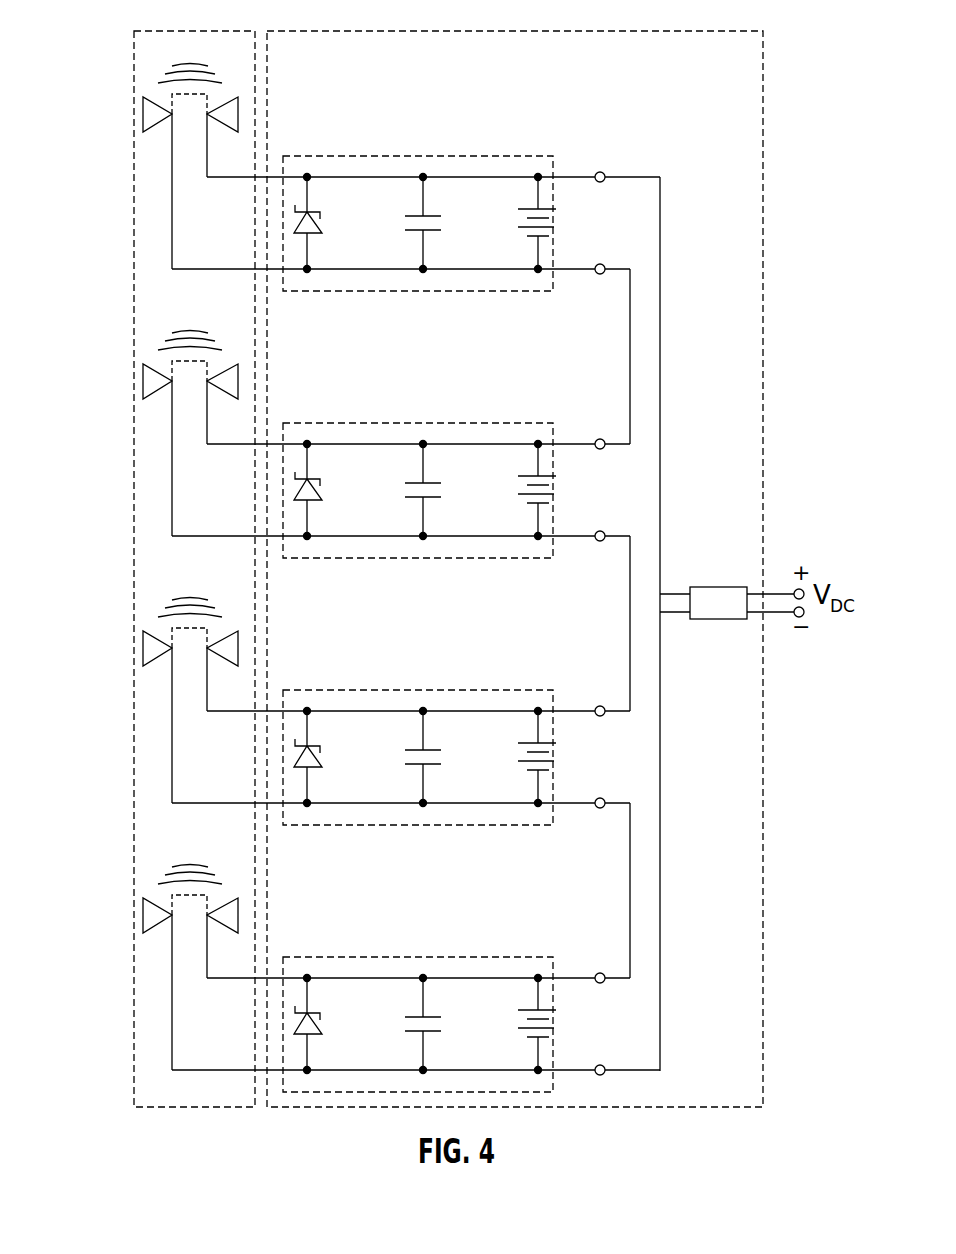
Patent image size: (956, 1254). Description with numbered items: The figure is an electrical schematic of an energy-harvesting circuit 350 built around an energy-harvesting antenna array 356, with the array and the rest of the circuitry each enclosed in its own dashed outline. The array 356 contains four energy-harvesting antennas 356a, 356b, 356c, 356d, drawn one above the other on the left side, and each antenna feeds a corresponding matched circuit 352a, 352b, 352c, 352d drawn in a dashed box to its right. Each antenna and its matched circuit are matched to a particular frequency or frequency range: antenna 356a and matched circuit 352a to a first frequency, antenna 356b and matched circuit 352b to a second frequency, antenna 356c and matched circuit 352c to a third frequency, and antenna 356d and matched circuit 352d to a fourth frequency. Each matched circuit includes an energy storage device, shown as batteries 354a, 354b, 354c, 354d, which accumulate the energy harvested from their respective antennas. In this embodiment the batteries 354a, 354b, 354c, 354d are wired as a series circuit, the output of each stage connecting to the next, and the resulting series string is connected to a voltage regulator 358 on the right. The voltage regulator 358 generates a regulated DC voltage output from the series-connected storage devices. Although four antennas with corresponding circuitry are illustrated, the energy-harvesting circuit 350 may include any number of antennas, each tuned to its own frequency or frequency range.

The energy-harvesting circuit 350 is at (716, 134).
The matched circuit 352a is at (401, 194).
The matched circuit 352b is at (401, 461).
The matched circuit 352c is at (401, 728).
The matched circuit 352d is at (401, 995).
The battery 354a is at (556, 223).
The battery 354b is at (556, 490).
The battery 354c is at (556, 757).
The battery 354d is at (556, 1024).
The energy-harvesting antenna array 356 is at (133, 548).
The energy-harvesting antenna 356a is at (155, 152).
The energy-harvesting antenna 356b is at (155, 419).
The energy-harvesting antenna 356c is at (155, 686).
The energy-harvesting antenna 356d is at (155, 953).
The voltage regulator 358 is at (718, 586).